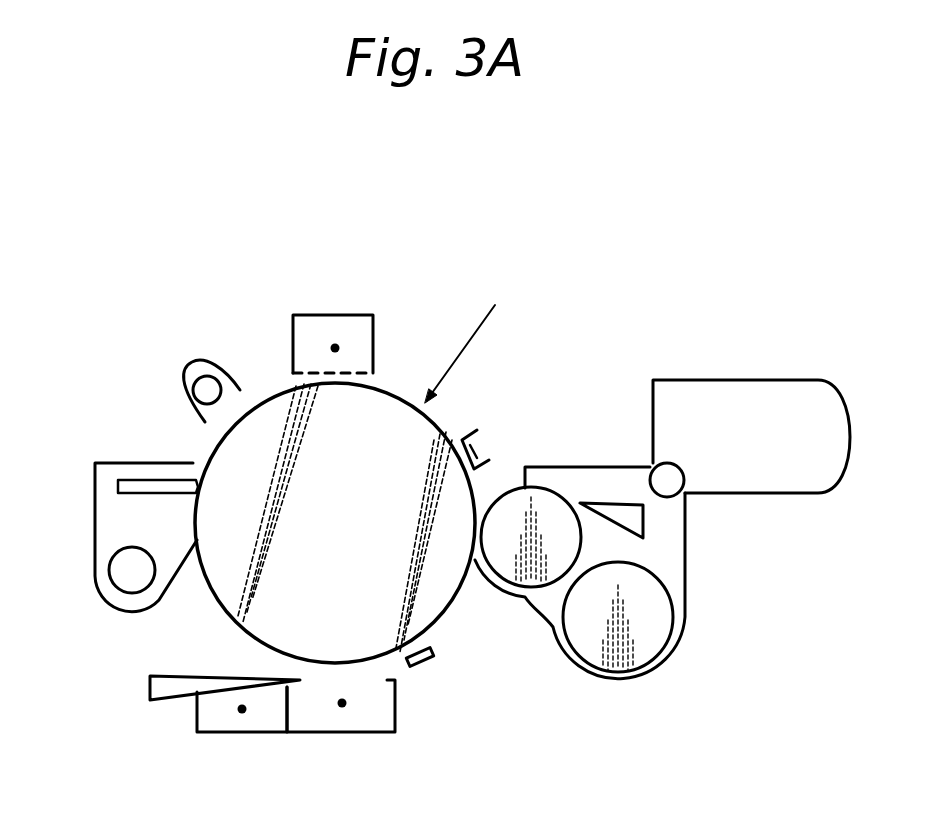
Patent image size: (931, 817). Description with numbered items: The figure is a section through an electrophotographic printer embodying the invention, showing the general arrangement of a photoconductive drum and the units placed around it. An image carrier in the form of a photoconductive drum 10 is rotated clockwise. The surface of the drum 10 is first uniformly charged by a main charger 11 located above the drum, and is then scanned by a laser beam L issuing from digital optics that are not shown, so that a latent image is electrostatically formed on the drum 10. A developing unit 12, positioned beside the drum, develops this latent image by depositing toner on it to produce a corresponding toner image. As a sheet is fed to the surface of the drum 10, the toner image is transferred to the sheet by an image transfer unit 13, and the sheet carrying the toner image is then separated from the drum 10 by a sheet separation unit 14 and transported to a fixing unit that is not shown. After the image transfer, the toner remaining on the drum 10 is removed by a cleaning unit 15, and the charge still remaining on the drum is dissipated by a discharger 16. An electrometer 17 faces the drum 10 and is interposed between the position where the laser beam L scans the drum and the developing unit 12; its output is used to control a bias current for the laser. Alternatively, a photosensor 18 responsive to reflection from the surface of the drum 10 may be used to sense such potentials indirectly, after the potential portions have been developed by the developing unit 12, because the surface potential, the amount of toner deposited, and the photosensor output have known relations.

The photoconductive drum 10 is at (405, 529).
The main charger 11 is at (322, 314).
The developing unit 12 is at (686, 575).
The image transfer unit 13 is at (342, 735).
The sheet separation unit 14 is at (240, 735).
The cleaning unit 15 is at (93, 510).
The discharger 16 is at (193, 360).
The electrometer 17 is at (472, 432).
The photosensor 18 is at (422, 666).
The laser beam L is at (495, 305).